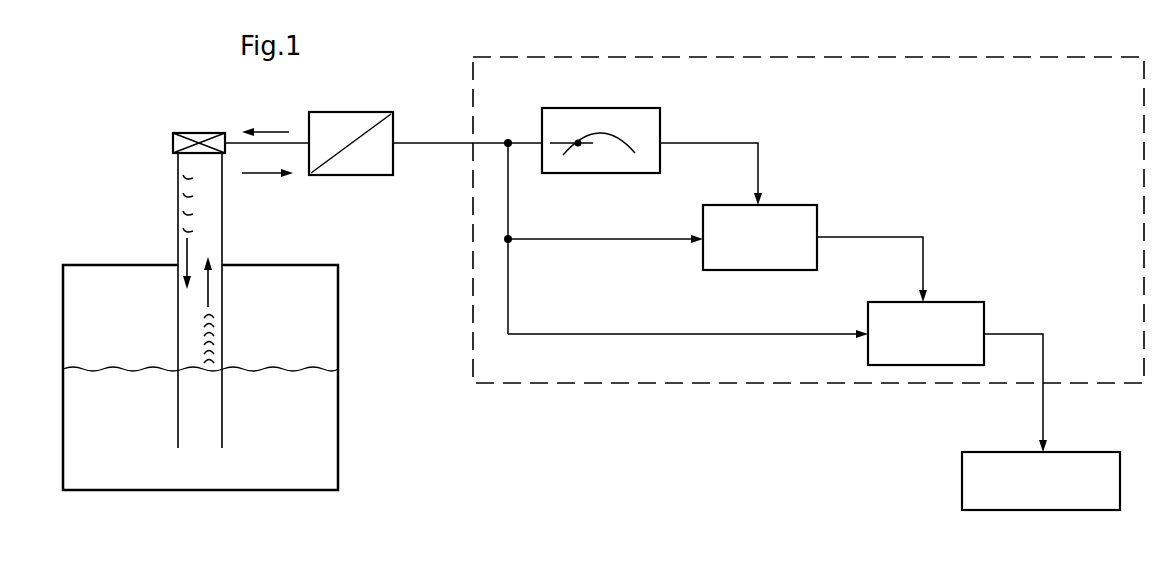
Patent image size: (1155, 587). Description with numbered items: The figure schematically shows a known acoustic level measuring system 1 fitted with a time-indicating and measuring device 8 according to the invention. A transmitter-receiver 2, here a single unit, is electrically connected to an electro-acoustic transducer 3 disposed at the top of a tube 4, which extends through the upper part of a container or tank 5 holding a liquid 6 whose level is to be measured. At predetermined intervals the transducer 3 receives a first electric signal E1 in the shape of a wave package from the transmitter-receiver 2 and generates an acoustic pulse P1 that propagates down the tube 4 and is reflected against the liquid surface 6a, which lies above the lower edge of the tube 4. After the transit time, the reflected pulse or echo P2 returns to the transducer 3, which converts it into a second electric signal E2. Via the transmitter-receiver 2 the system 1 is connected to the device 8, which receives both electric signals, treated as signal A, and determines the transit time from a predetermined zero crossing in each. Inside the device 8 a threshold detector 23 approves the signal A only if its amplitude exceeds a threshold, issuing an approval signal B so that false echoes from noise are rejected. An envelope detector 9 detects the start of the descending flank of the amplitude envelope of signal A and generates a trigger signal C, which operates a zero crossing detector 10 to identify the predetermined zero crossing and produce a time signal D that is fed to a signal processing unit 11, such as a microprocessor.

The acoustic level measuring system 1 is at (299, 104).
The transmitter-receiver 2 is at (347, 112).
The electro-acoustic transducer 3 is at (192, 133).
The tube 4 is at (178, 200).
The container or tank 5 is at (100, 265).
The liquid 6 is at (310, 430).
The liquid surface 6a is at (304, 368).
The time-indicating and measuring device 8 is at (913, 57).
The envelope detector 9 is at (792, 205).
The zero crossing detector 10 is at (957, 302).
The signal processing unit 11 is at (1092, 452).
The threshold detector 23 is at (592, 108).
The signal A is at (425, 143).
The approval signal B is at (712, 143).
The trigger signal C is at (862, 237).
The time signal D is at (1045, 357).
The first electric signal E1 is at (265, 119).
The second electric signal E2 is at (267, 163).
The acoustic pulse P1 is at (185, 252).
The reflected pulse or echo P2 is at (209, 290).